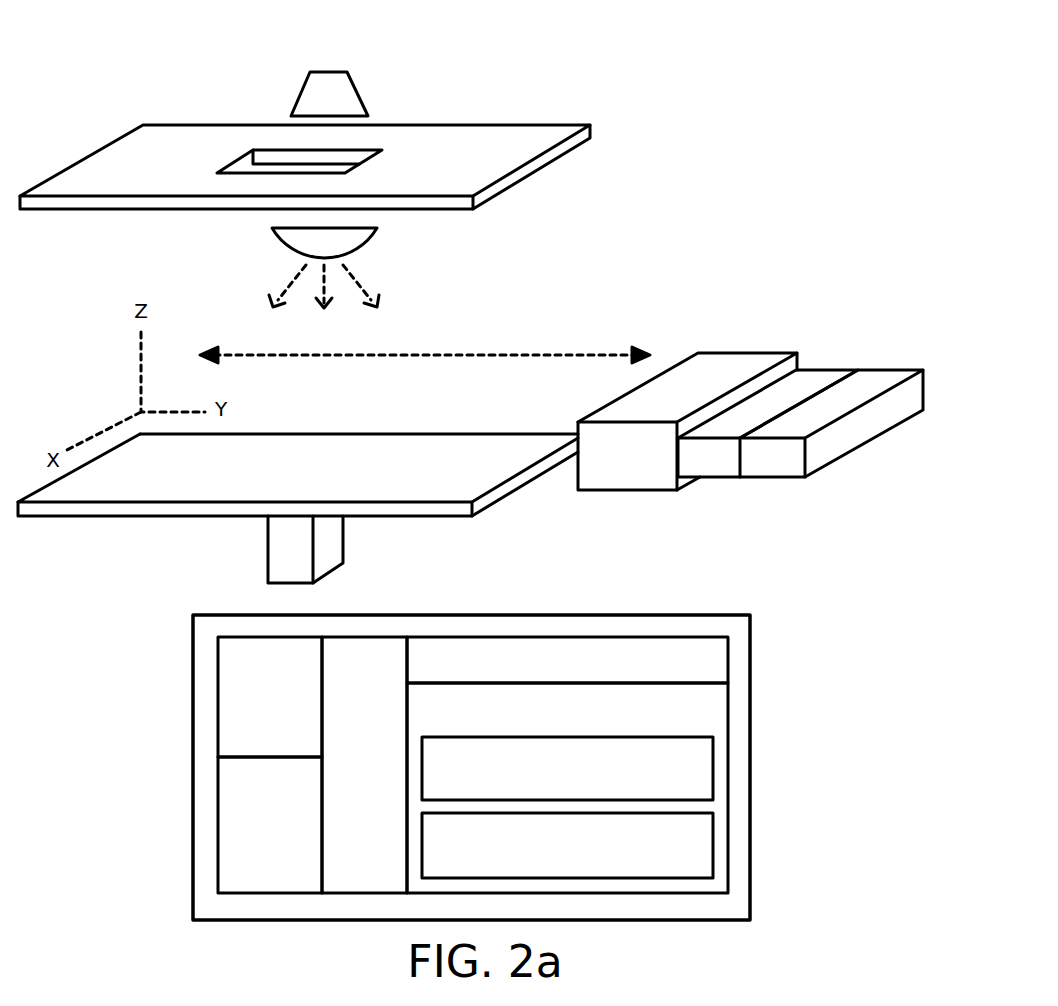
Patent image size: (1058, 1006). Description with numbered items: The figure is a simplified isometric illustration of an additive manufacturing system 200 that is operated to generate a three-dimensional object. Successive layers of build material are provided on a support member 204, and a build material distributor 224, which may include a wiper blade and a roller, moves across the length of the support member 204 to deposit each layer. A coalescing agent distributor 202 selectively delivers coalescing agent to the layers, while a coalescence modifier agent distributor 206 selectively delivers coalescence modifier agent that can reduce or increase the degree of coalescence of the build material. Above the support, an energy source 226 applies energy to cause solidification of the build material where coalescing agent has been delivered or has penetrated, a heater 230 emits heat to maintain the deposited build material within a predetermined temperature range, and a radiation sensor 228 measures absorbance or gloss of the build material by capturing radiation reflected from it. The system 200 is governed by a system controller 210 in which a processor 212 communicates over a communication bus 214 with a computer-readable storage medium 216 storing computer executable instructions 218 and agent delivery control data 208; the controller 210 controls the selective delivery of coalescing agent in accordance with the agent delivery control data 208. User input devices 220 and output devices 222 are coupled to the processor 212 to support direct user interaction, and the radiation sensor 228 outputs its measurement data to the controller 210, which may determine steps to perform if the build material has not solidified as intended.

The additive manufacturing system 200 is at (745, 50).
The radiation sensor 228 is at (343, 72).
The heater 230 is at (500, 125).
The energy source 226 is at (377, 232).
The support member 204 is at (428, 433).
The build material distributor 224 is at (700, 352).
The coalescence modifier agent distributor 206 is at (802, 370).
The coalescing agent distributor 202 is at (865, 370).
The system controller 210 is at (192, 908).
The processor 212 is at (567, 660).
The communication bus 214 is at (364, 765).
The computer-readable storage medium 216 is at (750, 763).
The computer executable instructions 218 is at (567, 768).
The user input devices 220 is at (270, 825).
The output devices 222 is at (270, 697).
The agent delivery control data 208 is at (567, 845).